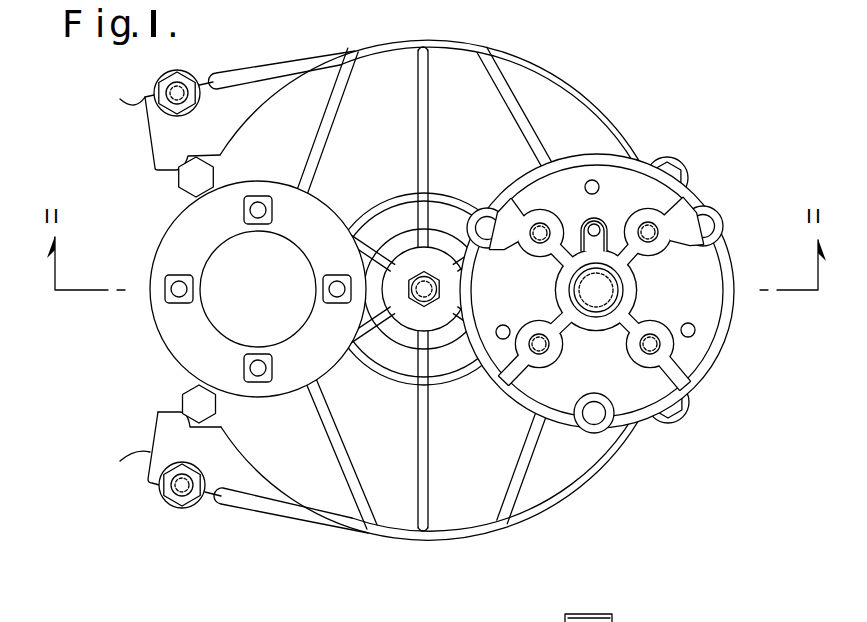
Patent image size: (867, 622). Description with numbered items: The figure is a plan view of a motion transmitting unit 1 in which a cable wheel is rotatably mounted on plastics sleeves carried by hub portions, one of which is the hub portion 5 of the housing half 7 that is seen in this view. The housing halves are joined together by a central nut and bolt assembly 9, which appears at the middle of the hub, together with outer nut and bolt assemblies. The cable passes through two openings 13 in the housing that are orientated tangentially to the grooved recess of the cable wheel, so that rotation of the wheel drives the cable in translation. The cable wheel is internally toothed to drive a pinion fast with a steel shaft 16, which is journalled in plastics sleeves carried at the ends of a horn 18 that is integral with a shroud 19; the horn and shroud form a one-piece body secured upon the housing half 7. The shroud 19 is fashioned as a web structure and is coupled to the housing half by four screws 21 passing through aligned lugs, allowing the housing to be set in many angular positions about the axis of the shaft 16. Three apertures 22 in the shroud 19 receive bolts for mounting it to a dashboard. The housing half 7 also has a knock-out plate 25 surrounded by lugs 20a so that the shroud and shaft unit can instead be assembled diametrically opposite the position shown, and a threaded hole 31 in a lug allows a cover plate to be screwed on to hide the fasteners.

The motion transmitting unit 1 is at (586, 93).
The hub portion 5 is at (387, 228).
The housing half 7 is at (462, 514).
The central nut and bolt assembly 9 is at (409, 316).
The openings 13 is at (150, 111).
The steel shaft 16 is at (582, 286).
The horn 18 is at (630, 283).
The shroud 19 is at (697, 311).
The lugs 20a is at (241, 212).
The screws 21 is at (543, 228).
The apertures 22 is at (484, 218).
The knock-out plate 25 is at (275, 291).
The threaded hole 31 is at (596, 226).